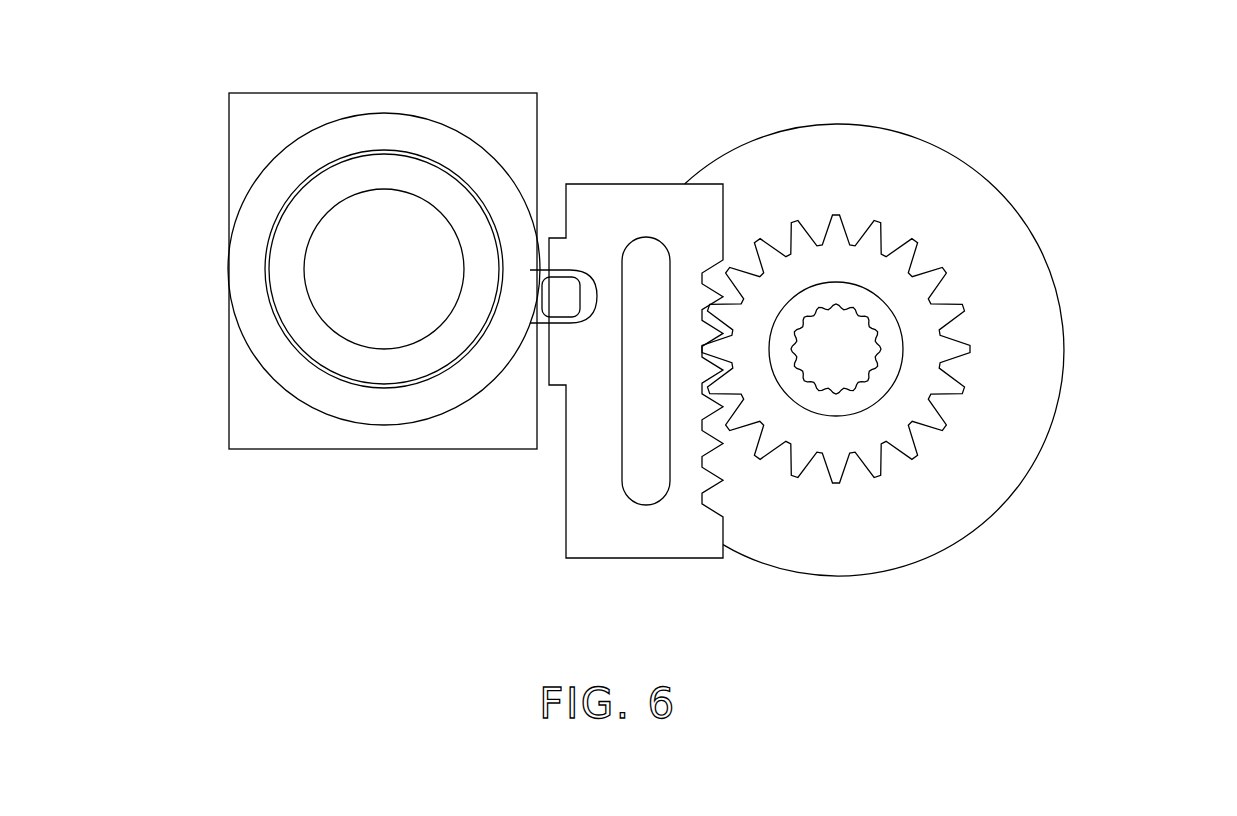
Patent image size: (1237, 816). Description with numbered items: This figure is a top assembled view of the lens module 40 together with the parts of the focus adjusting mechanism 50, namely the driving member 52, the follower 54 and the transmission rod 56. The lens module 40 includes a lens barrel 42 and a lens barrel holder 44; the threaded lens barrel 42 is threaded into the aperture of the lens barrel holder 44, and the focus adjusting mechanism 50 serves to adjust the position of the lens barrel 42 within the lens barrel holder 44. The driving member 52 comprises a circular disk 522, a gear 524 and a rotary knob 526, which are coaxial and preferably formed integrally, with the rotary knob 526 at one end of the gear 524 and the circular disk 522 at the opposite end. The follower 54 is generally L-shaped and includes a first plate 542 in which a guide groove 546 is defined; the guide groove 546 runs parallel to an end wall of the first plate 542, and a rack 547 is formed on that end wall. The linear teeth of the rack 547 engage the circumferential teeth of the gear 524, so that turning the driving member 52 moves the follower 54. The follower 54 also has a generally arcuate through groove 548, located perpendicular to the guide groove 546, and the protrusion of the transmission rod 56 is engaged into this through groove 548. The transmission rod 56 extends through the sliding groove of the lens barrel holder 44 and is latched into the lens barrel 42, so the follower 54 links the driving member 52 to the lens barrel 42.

The lens module 40 is at (217, 377).
The lens barrel 42 is at (320, 198).
The lens barrel holder 44 is at (485, 110).
The focus adjusting mechanism 50 is at (587, 53).
The driving member 52 is at (930, 318).
The circular disk 522 is at (960, 467).
The gear 524 is at (932, 380).
The rotary knob 526 is at (847, 338).
The follower 54 is at (636, 352).
The first plate 542 is at (592, 508).
The guide groove 546 is at (642, 490).
The rack 547 is at (710, 482).
The through groove 548 is at (589, 308).
The transmission rod 56 is at (567, 290).